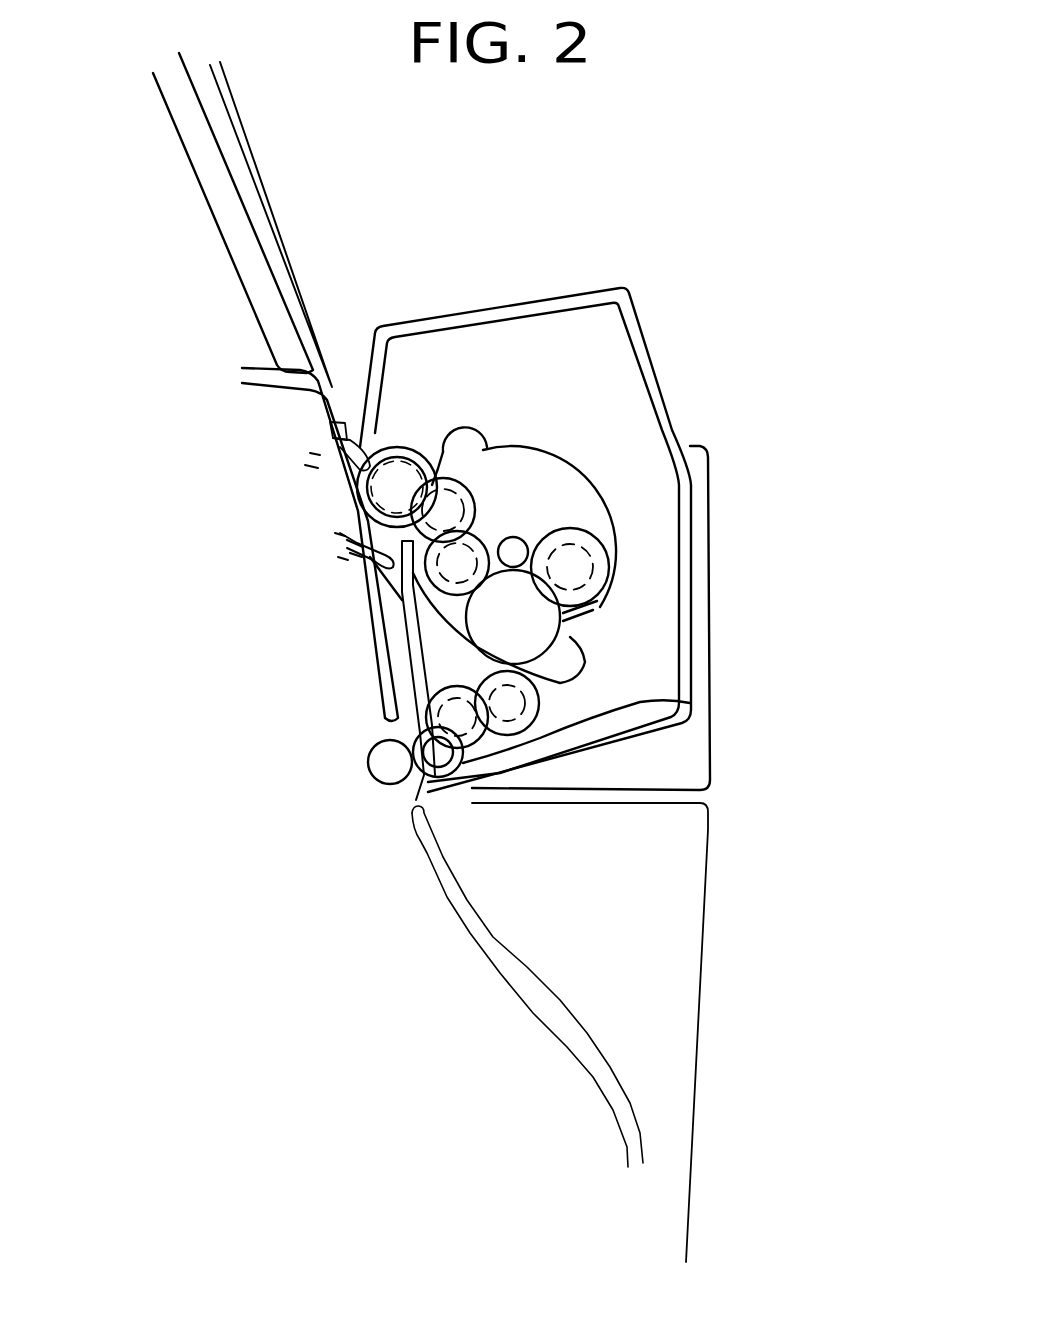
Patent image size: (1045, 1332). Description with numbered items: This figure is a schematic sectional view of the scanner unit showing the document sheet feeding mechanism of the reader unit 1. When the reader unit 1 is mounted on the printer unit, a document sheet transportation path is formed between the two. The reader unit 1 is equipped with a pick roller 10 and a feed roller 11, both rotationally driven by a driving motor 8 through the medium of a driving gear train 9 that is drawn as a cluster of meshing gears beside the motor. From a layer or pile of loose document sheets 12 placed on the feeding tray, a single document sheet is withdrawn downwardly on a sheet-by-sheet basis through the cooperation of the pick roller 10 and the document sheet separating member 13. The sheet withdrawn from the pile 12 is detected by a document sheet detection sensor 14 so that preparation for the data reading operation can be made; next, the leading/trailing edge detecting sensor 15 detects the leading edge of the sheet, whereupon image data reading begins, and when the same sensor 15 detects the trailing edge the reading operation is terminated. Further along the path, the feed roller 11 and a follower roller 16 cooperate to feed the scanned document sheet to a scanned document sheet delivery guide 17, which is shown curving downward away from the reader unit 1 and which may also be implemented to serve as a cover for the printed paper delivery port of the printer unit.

The reader unit 1 is at (690, 529).
The driving motor 8 is at (557, 487).
The driving gear train 9 is at (593, 627).
The pick roller 10 is at (400, 447).
The feed roller 11 is at (690, 703).
The document sheets 12 is at (270, 192).
The document sheet separating member 13 is at (345, 487).
The document sheet detection sensor 14 is at (345, 447).
The leading/trailing edge detecting sensor 15 is at (347, 555).
The follower roller 16 is at (393, 786).
The scanned document sheet delivery guide 17 is at (577, 1028).